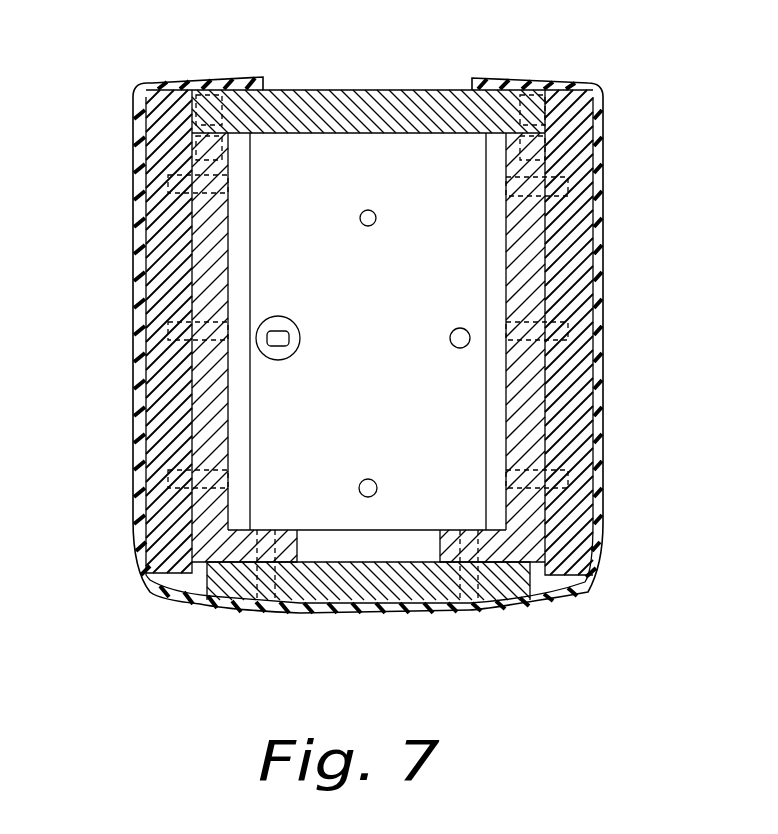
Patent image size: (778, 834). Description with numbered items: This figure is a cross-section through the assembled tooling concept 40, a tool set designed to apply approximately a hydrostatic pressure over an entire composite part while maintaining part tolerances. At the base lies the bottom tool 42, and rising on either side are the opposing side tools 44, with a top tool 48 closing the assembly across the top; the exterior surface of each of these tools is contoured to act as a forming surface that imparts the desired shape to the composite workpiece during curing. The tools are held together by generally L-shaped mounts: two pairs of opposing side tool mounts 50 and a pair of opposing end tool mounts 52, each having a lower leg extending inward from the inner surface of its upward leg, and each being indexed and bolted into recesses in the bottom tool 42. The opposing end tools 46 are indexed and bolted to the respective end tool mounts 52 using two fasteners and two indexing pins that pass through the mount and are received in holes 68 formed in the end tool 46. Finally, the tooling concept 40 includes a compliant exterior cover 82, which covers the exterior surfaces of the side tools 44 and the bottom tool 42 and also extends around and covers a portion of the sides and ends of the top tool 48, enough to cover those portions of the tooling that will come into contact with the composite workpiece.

The tooling concept 40 is at (122, 624).
The bottom tool 42 is at (340, 590).
The side tools 44 is at (178, 260).
The end tools 46 is at (497, 158).
The top tool 48 is at (361, 80).
The side tool mounts 50 is at (208, 401).
The end tool mounts 52 is at (456, 240).
The holes 68 is at (370, 479).
The compliant exterior cover 82 is at (602, 145).